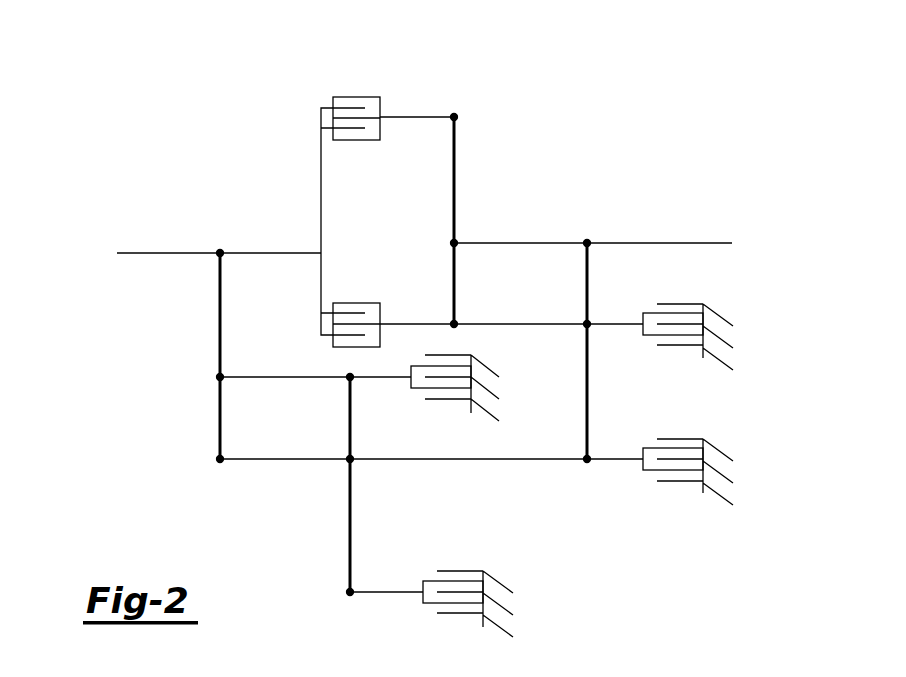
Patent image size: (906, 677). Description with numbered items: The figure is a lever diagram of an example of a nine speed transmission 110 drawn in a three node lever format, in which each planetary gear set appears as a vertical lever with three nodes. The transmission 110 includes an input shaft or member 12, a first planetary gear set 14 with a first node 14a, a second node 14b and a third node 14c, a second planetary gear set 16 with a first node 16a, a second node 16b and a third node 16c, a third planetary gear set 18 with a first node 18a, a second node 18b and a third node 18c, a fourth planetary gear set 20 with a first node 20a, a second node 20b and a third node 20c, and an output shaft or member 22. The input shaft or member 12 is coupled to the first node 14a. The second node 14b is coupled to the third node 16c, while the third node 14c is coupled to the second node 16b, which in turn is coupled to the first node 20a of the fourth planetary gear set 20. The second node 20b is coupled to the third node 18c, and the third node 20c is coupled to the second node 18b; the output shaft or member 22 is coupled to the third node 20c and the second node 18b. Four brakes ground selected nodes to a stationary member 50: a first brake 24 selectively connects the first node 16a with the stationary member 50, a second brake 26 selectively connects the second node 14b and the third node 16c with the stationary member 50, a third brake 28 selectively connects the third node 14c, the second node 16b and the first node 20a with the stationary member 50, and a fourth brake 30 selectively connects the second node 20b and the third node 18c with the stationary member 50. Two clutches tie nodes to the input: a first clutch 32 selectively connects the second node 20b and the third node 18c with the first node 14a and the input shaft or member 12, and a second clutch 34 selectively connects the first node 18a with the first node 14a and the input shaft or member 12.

The nine speed transmission 110 is at (640, 110).
The input shaft or member 12 is at (132, 250).
The first planetary gear set 14 is at (211, 471).
The first node 14a is at (220, 250).
The second node 14b is at (216, 377).
The third node 14c is at (216, 459).
The second planetary gear set 16 is at (341, 607).
The first node 16a is at (346, 592).
The second node 16b is at (348, 462).
The third node 16c is at (348, 380).
The third planetary gear set 18 is at (481, 104).
The first node 18a is at (454, 112).
The second node 18b is at (454, 240).
The third node 18c is at (458, 322).
The fourth planetary gear set 20 is at (617, 230).
The first node 20a is at (587, 463).
The second node 20b is at (585, 327).
The third node 20c is at (587, 240).
The output shaft or member 22 is at (700, 242).
The first brake 24 is at (460, 616).
The second brake 26 is at (447, 402).
The third brake 28 is at (681, 484).
The fourth brake 30 is at (680, 348).
The first clutch 32 is at (360, 302).
The second clutch 34 is at (360, 96).
The stationary member 50 is at (495, 415).